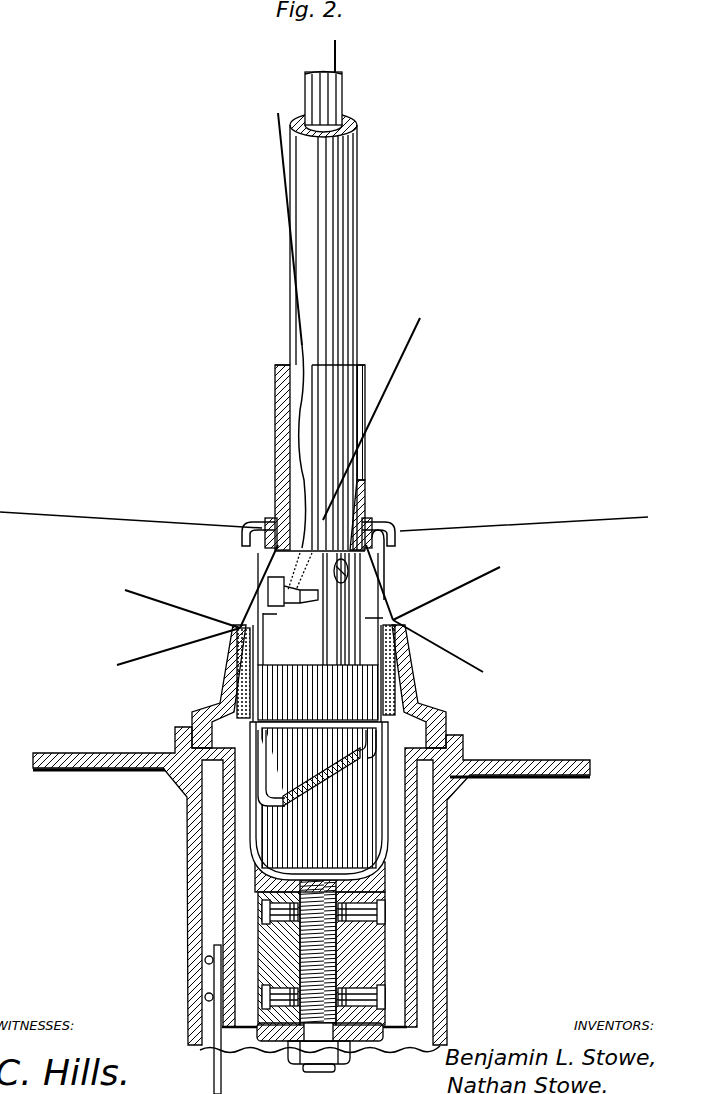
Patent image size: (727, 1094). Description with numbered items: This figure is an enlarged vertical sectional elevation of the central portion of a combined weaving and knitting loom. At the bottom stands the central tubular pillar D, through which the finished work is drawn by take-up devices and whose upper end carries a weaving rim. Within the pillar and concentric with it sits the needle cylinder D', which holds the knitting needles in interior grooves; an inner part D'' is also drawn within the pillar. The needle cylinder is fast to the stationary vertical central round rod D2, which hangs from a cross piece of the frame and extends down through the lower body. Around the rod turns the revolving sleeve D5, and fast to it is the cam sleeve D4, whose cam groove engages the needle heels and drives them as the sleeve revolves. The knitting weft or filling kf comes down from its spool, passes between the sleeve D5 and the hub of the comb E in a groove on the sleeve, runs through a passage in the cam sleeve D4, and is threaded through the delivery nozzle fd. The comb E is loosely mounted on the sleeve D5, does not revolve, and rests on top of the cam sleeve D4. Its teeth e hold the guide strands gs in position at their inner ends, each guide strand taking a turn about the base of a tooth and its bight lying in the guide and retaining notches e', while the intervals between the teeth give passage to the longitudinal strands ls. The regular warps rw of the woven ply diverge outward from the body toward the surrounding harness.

The longitudinal strands ls is at (332, 52).
The central stationary round rod D2 is at (345, 99).
The revolving sleeve D5 is at (360, 243).
The knitting weft or filling kf is at (288, 258).
The comb E is at (275, 455).
The guide and retaining notches e' is at (325, 513).
The comb teeth e is at (315, 520).
The guide strands gs is at (265, 552).
The delivery nozzle fd is at (264, 592).
The regular warps rw is at (192, 646).
The cam sleeve D4 is at (320, 637).
The needle cylinder D' is at (339, 686).
The inner vessel D'' is at (319, 801).
The central tubular pillar D is at (311, 886).